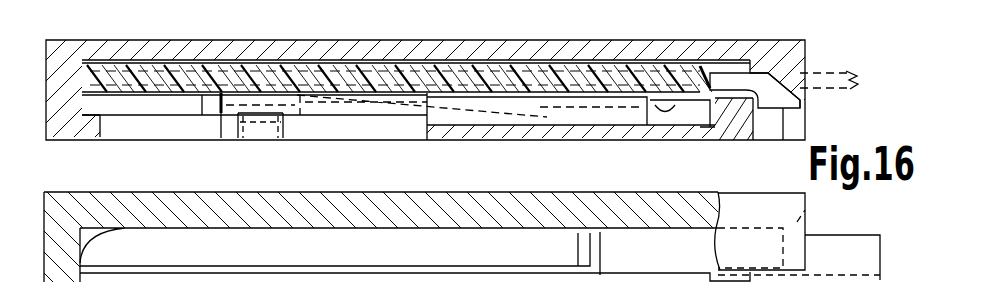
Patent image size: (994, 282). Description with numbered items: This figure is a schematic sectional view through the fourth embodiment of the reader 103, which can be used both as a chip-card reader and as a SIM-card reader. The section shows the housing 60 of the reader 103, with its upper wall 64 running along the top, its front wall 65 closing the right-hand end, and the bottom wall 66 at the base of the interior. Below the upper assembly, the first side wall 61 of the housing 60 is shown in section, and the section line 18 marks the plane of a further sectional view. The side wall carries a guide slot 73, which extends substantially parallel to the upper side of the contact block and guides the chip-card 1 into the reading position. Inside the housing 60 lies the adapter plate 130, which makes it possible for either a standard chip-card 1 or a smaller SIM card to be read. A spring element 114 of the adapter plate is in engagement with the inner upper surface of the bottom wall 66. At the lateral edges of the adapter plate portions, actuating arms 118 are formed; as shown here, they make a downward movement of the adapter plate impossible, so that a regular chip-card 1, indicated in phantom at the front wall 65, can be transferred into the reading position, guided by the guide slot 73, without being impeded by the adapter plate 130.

The chip-card 1 is at (838, 86).
The section line 18 is at (539, 250).
The housing 60 is at (118, 191).
The first side wall 61 is at (240, 207).
The upper wall 64 is at (598, 50).
The front wall 65 is at (808, 52).
The bottom wall 66 is at (508, 130).
The guide slot 73 is at (262, 230).
The reader 103 is at (777, 151).
The spring element 114 is at (447, 130).
The actuating arm 118 is at (772, 92).
The adapter plate 130 is at (167, 97).